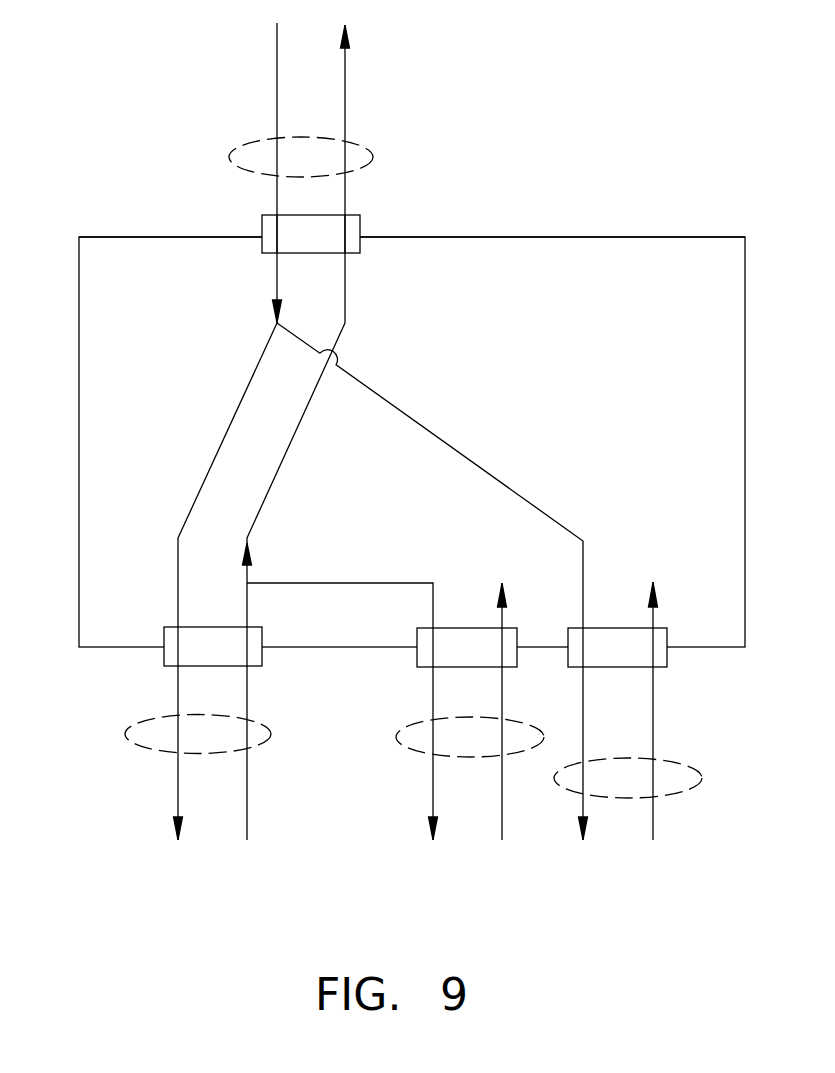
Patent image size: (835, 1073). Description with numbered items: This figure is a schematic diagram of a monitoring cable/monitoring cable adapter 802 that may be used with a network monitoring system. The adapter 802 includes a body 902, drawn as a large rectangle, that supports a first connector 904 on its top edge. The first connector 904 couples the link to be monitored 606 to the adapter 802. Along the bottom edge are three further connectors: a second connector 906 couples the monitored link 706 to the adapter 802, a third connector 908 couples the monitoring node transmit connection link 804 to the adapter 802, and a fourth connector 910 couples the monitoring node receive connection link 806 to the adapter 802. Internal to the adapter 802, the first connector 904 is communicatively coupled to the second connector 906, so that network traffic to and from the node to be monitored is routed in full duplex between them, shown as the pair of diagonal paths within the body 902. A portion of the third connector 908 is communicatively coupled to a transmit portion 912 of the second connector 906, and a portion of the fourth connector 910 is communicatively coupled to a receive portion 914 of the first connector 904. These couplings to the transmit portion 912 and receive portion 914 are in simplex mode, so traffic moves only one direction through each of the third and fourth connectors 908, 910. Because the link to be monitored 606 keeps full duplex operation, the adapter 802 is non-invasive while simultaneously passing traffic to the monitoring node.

The link to be monitored 606 is at (257, 140).
The monitored link 706 is at (142, 745).
The monitoring cable/monitoring cable adapter 802 is at (609, 238).
The monitoring node transmit connection link 804 is at (410, 748).
The monitoring node receive connection link 806 is at (690, 767).
The body 902 is at (103, 250).
The first connector 904 is at (362, 225).
The second connector 906 is at (163, 660).
The third connector 908 is at (415, 660).
The fourth connector 910 is at (668, 658).
The transmit portion 912 is at (248, 573).
The receive portion 914 is at (273, 283).